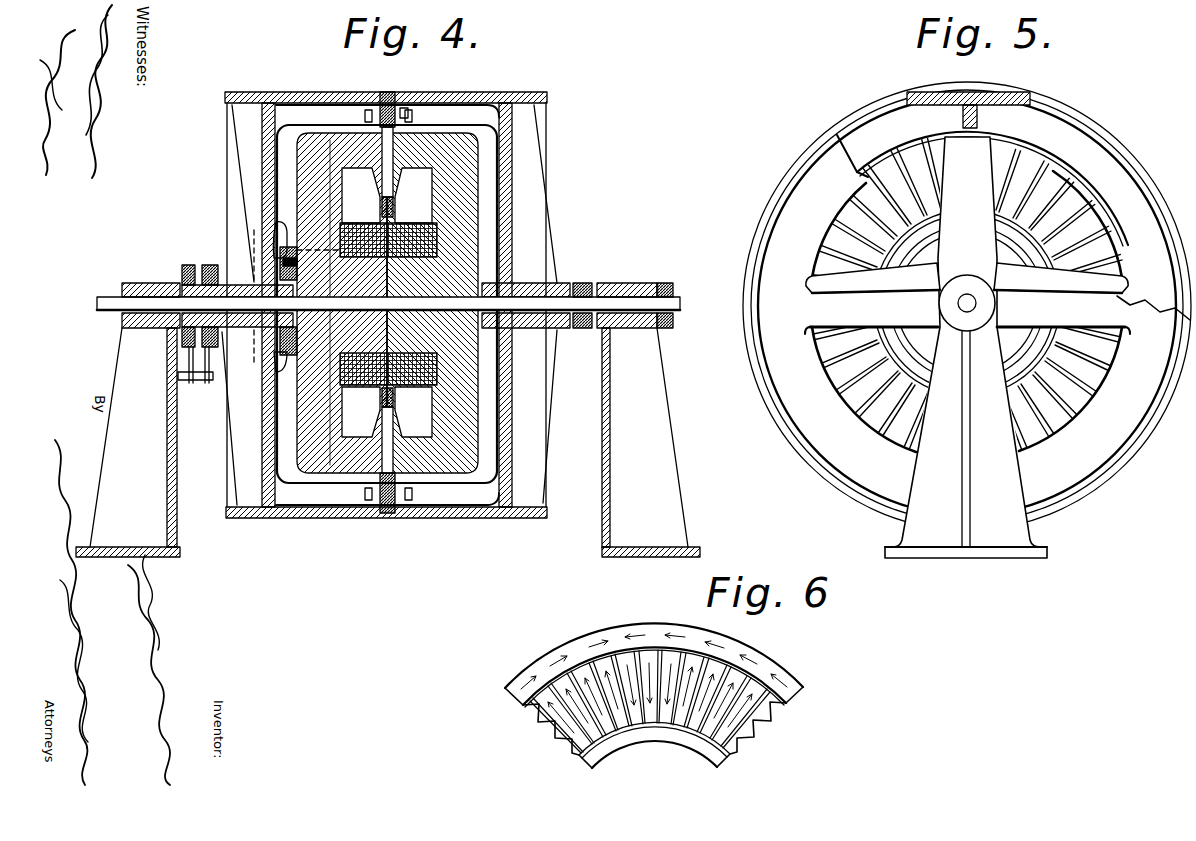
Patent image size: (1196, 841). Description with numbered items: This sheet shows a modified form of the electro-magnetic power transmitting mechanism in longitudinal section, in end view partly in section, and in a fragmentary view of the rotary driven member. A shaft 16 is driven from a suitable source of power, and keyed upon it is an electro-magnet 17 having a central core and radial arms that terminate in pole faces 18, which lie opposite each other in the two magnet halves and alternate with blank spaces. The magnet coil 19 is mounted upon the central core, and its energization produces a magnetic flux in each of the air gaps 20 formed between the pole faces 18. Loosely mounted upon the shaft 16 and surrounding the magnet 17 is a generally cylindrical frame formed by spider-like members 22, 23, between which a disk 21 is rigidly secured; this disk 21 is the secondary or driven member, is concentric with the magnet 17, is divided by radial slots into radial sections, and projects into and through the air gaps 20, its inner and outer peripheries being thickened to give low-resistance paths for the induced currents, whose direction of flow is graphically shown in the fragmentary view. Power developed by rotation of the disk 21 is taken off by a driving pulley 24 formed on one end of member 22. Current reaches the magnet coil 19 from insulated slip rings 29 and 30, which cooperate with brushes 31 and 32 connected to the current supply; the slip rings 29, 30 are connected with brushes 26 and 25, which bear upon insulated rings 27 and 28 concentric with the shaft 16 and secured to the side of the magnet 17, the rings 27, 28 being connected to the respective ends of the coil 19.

In FIG. 4, the shaft 16 is at (103, 297).
In FIG. 4, the electro-magnet 17 is at (326, 412).
In FIG. 4, the pole faces 18 is at (379, 185).
In FIG. 5, the pole faces 18 is at (1018, 155).
In FIG. 4, the magnet coil 19 is at (408, 236).
In FIG. 4, the air gaps 20 is at (368, 470).
In FIG. 4, the disk 21 is at (372, 512).
In FIG. 5, the disk 21 is at (1105, 210).
In FIG. 6, the disk 21 is at (666, 695).
In FIG. 4, the spider-like member 22 is at (243, 463).
In FIG. 4, the spider-like member 23 is at (530, 458).
In FIG. 4, the driving pulley 24 is at (253, 519).
In FIG. 4, the brush 25 is at (272, 230).
In FIG. 4, the brush 26 is at (274, 386).
In FIG. 4, the insulated ring 27 is at (282, 258).
In FIG. 4, the insulated ring 28 is at (280, 272).
In FIG. 4, the slip ring 29 is at (182, 263).
In FIG. 4, the slip ring 30 is at (204, 264).
In FIG. 4, the brush 31 is at (192, 384).
In FIG. 4, the brush 32 is at (207, 385).